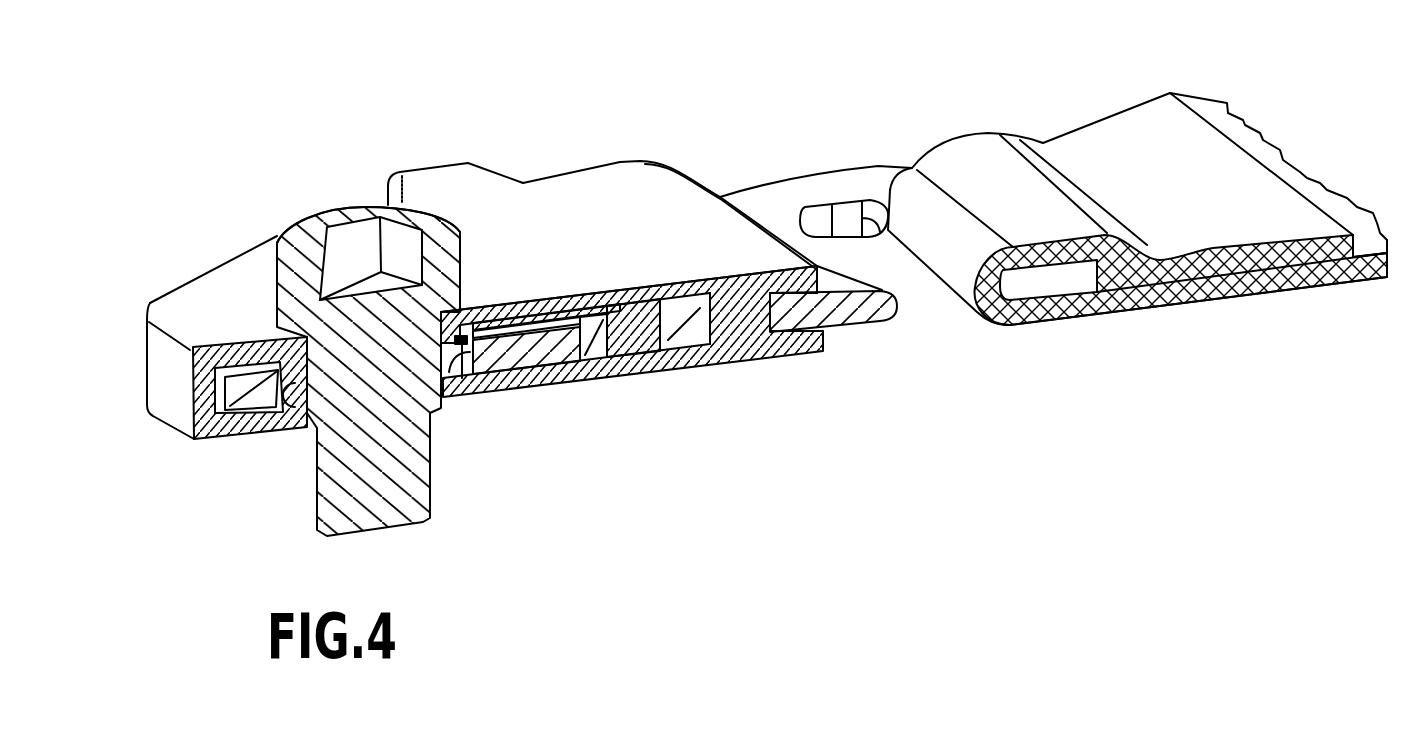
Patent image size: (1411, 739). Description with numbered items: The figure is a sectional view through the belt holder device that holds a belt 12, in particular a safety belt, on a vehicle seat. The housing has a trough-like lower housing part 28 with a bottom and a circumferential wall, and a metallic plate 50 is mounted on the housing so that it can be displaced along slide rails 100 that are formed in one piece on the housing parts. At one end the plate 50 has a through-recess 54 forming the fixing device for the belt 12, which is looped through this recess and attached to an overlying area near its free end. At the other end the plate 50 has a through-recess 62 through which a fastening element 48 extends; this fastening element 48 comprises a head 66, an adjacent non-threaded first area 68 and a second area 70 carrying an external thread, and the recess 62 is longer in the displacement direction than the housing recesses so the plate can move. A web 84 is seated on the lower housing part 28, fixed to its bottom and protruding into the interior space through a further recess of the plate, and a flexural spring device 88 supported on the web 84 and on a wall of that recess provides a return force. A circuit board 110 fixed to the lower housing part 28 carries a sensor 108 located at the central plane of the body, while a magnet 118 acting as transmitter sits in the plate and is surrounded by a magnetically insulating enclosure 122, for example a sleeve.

The belt 12 is at (1147, 147).
The lower housing part 28 is at (627, 197).
The fastening element 48 is at (287, 287).
The plate 50 is at (510, 350).
The through-recess 54 is at (860, 253).
The through-recess 62 is at (447, 380).
The head 66 is at (293, 257).
The first area 68 is at (300, 427).
The second area 70 is at (443, 477).
The web 84 is at (750, 347).
The flexural spring device 88 is at (710, 287).
The slide rails 100 is at (663, 357).
The sensor 108 is at (595, 305).
The circuit board 110 is at (523, 297).
The magnet 118 is at (607, 350).
The magnetically insulating enclosure 122 is at (590, 350).